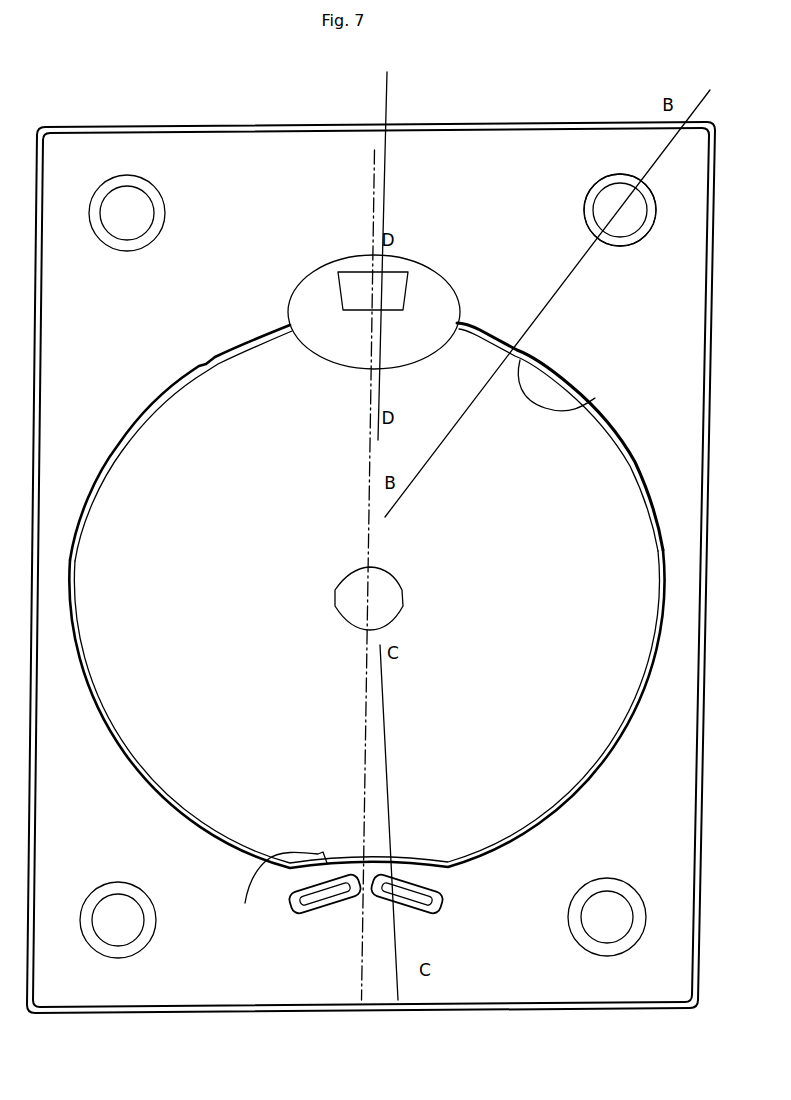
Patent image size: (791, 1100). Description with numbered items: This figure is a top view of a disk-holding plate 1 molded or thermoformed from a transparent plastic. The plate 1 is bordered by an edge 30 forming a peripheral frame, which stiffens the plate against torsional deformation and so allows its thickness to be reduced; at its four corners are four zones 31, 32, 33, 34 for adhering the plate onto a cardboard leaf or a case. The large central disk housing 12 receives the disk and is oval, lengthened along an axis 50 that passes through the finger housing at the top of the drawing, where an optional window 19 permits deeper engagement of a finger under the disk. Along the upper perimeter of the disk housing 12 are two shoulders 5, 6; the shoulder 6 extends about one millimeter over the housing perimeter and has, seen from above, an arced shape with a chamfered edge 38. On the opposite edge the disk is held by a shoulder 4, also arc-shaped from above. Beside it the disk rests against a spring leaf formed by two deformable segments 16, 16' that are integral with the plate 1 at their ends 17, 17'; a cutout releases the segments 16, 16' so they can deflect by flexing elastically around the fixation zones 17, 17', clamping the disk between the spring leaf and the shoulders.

The plate 1 is at (652, 851).
The shoulder 4 is at (283, 887).
The shoulder 5 is at (241, 353).
The shoulder 6 is at (516, 352).
The circular receiving area 12 is at (634, 568).
The deformable segment 16 is at (325, 973).
The deformable segment 16' is at (404, 973).
The end 17 is at (309, 969).
The end 17' is at (437, 969).
The window 19 is at (364, 291).
The edge 30 is at (712, 334).
The adhesion zone 31 is at (130, 200).
The adhesion zone 32 is at (611, 178).
The adhesion zone 33 is at (645, 212).
The adhesion zone 34 is at (92, 950).
The chamfered edge 38 is at (595, 398).
The axis 50 is at (366, 702).